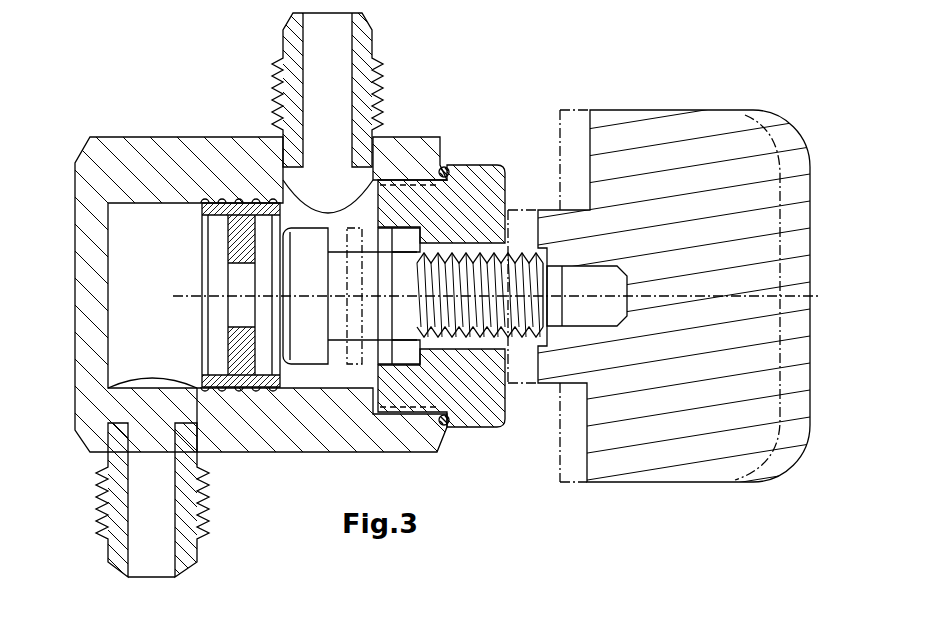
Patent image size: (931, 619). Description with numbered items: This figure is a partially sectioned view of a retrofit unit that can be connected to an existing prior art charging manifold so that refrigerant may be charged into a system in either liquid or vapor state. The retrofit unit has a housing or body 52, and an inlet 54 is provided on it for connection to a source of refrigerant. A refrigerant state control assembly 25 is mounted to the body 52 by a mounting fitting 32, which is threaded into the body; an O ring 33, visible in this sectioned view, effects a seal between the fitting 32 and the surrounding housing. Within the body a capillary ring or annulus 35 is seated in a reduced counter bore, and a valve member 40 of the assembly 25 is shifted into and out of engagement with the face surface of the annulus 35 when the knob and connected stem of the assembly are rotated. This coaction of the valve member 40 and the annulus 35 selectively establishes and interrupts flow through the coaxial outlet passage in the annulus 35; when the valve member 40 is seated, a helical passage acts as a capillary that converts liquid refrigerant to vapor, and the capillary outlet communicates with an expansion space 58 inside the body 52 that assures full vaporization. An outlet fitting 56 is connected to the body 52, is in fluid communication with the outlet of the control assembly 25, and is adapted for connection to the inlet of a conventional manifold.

The refrigerant state control assembly 25 is at (643, 87).
The mounting fitting 32 is at (471, 175).
The O ring 33 is at (444, 168).
The capillary ring or annulus 35 is at (232, 212).
The valve member 40 is at (305, 343).
The housing or body 52 is at (140, 157).
The inlet 54 is at (367, 42).
The outlet fitting 56 is at (121, 540).
The expansion space 58 is at (148, 256).